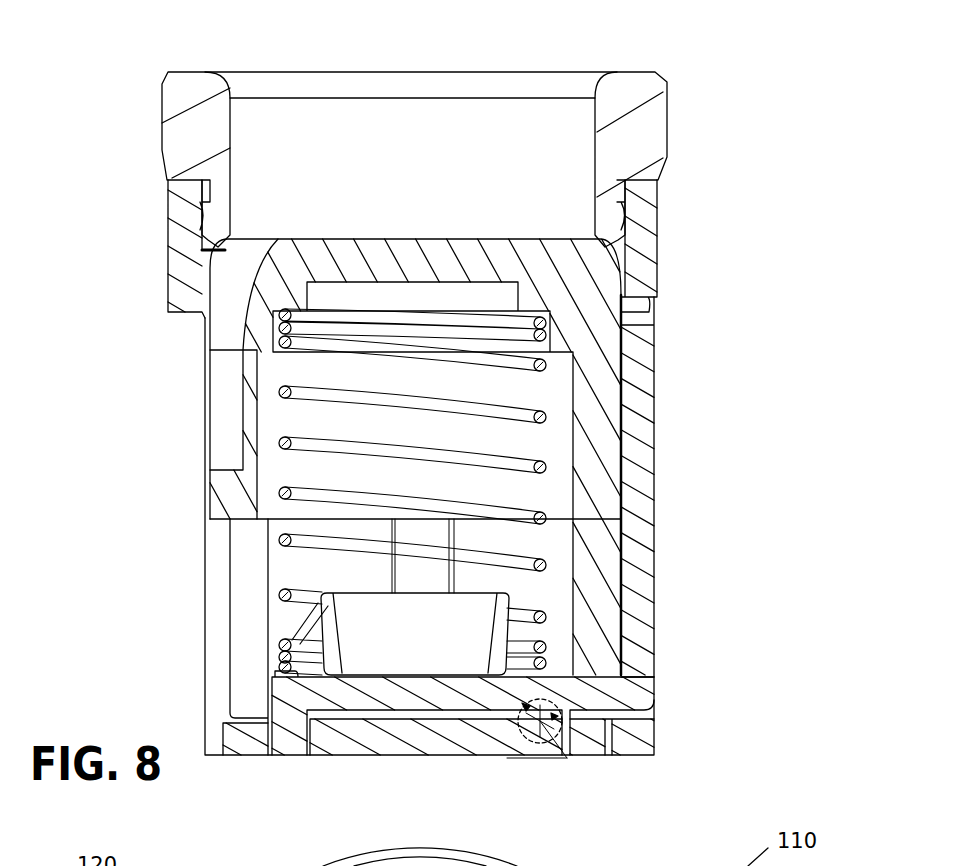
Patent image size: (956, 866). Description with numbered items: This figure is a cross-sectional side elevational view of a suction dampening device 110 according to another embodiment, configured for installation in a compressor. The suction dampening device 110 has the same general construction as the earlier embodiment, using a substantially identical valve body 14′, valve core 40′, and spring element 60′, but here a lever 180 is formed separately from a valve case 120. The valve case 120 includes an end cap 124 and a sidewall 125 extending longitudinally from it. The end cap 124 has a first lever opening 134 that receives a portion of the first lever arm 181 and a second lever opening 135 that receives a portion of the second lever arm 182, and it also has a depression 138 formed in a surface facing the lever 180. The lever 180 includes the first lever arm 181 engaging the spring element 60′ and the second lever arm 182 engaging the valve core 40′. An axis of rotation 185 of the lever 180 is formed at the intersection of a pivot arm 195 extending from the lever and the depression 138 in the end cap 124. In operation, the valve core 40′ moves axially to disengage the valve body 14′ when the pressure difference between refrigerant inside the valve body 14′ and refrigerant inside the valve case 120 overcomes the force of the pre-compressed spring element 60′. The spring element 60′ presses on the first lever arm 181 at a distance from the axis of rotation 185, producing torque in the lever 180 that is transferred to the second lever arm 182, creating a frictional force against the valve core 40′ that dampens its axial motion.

The valve body 14′ is at (205, 135).
The sidewall 125 is at (185, 247).
The suction dampening device 110 is at (693, 242).
The valve core 40′ is at (610, 455).
The second lever arm 182 is at (635, 547).
The spring element 60′ is at (280, 593).
The first lever arm 181 is at (285, 707).
The lever 180 is at (662, 685).
The valve case 120 is at (665, 728).
The depression 138 is at (540, 721).
The axis of rotation 185 is at (540, 721).
The first lever opening 134 is at (310, 757).
The end cap 124 is at (393, 757).
The second lever opening 135 is at (567, 757).
The pivot arm 195 is at (608, 757).